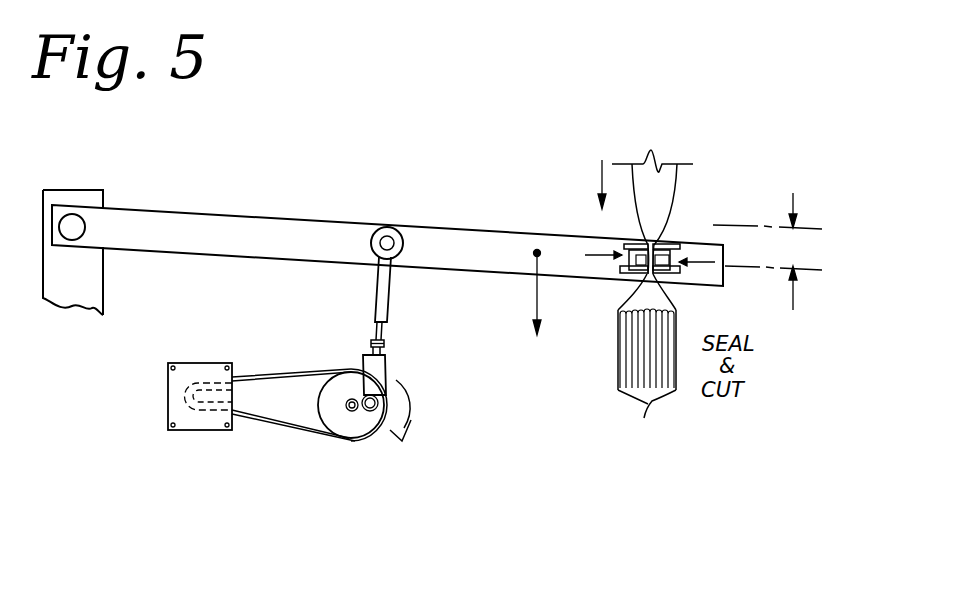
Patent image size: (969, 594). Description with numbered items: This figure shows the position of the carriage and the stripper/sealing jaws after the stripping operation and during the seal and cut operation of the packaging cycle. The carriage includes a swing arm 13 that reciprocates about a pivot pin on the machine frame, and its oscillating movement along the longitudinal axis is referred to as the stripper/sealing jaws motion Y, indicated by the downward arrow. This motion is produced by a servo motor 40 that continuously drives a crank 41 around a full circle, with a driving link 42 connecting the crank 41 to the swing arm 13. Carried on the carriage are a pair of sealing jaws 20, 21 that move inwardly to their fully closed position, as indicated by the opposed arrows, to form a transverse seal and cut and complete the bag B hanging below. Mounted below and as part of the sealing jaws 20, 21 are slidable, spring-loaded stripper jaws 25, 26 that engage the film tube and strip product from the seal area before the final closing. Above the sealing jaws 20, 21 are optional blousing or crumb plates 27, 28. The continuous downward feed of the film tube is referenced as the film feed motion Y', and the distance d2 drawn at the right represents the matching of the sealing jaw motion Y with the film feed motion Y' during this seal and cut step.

The swing arm 13 is at (358, 228).
The sealing jaw 20 is at (644, 250).
The sealing jaw 21 is at (678, 256).
The stripper jaw 25 is at (637, 274).
The stripper jaw 26 is at (670, 274).
The blousing or crumb plate 27 is at (627, 247).
The blousing or crumb plate 28 is at (673, 250).
The servo motor 40 is at (198, 425).
The crank 41 is at (350, 418).
The driving link 42 is at (385, 300).
The bag B is at (660, 396).
The stripper/sealing jaws motion Y is at (512, 293).
The film feed motion Y' is at (574, 181).
The distance d2 is at (793, 250).